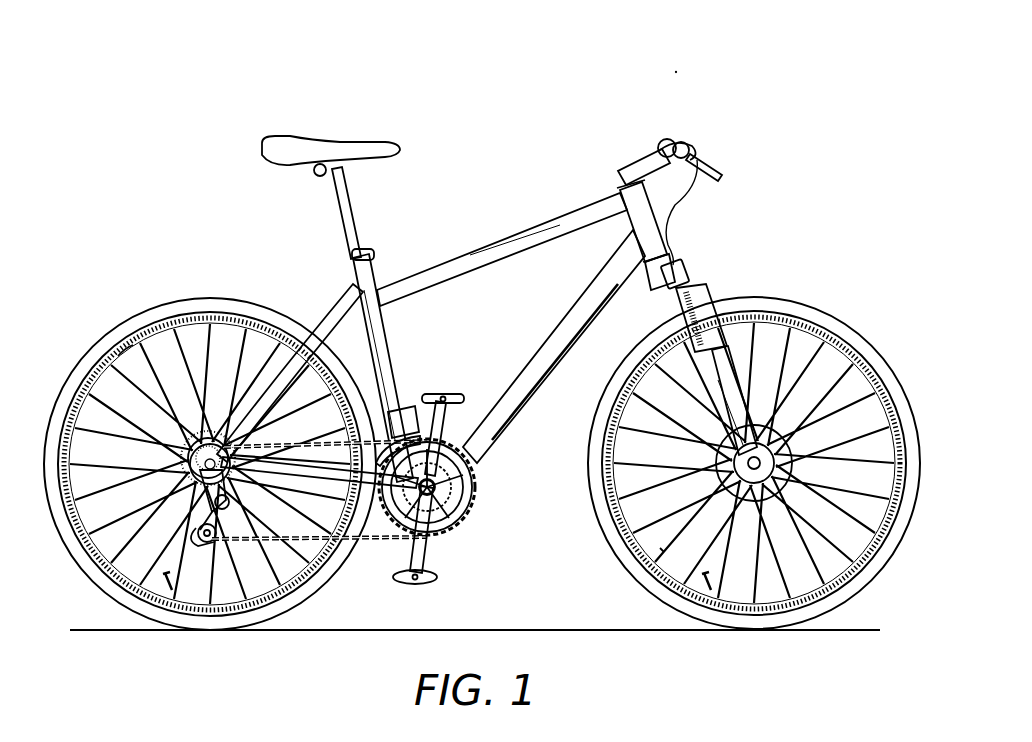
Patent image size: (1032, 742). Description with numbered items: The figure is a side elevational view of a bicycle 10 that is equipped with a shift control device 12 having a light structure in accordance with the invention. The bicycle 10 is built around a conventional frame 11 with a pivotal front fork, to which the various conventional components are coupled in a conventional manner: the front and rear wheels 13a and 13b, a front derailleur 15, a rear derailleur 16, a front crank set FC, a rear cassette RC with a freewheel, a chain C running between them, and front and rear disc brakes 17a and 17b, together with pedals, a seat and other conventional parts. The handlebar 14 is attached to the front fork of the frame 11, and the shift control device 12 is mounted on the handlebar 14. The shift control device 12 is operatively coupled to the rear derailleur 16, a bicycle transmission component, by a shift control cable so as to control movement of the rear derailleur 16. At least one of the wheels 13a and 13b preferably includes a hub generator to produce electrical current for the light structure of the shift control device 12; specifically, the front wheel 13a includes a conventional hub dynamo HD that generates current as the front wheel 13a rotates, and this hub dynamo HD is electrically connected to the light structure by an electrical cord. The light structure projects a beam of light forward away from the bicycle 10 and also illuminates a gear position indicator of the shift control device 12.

The bicycle 10 is at (672, 73).
The frame 11 is at (478, 243).
The shift control device 12 is at (702, 118).
The front wheel 13a is at (776, 300).
The rear wheel 13b is at (214, 298).
The handlebar 14 is at (658, 143).
The front derailleur 15 is at (390, 412).
The rear derailleur 16 is at (192, 518).
The front disc brake 17a is at (770, 463).
The rear disc brake 17b is at (127, 348).
The rear cassette RC is at (200, 466).
The front crank set FC is at (470, 507).
The chain C is at (381, 540).
The hub dynamo HD is at (660, 548).